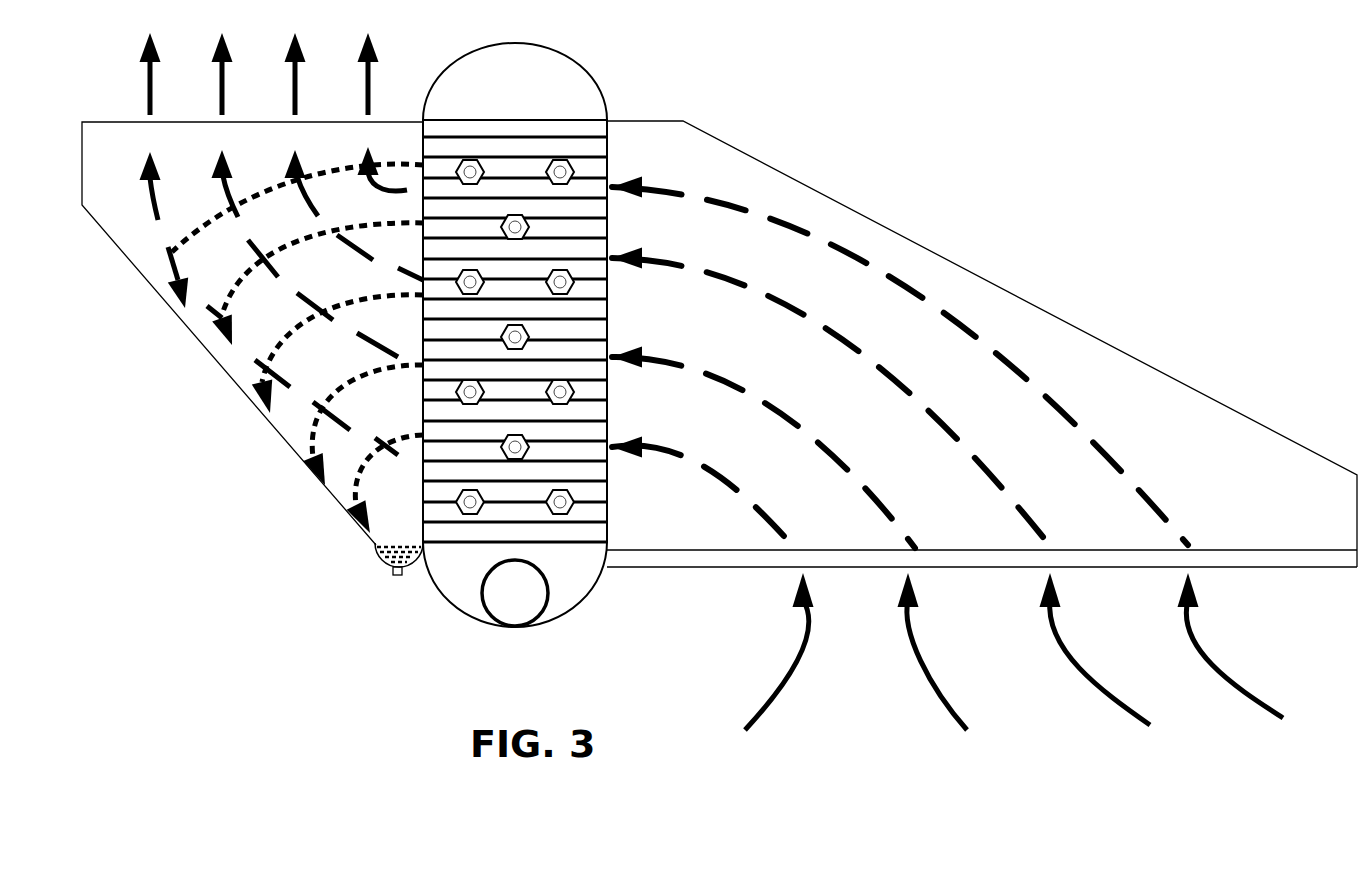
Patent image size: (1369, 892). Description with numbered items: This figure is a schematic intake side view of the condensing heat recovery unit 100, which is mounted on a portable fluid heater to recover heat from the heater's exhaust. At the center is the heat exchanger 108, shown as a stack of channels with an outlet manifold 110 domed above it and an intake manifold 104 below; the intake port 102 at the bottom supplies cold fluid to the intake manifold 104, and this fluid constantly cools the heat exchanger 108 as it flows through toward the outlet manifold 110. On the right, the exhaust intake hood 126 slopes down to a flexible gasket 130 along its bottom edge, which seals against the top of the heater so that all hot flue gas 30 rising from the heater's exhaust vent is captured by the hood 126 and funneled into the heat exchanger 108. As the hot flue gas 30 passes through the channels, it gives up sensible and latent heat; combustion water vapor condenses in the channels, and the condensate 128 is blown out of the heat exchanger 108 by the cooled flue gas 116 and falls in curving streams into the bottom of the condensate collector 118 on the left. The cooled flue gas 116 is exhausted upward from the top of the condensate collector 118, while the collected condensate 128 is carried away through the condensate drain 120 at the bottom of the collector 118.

The hot flue gas 30 is at (1262, 666).
The condensing heat recovery unit 100 is at (982, 361).
The intake port 102 is at (540, 618).
The intake manifold 104 is at (596, 580).
The heat exchanger 108 is at (612, 117).
The outlet manifold 110 is at (563, 70).
The cooled flue gas 116 is at (390, 45).
The condensate collector 118 is at (222, 372).
The condensate drain 120 is at (395, 576).
The exhaust intake hood 126 is at (1040, 307).
The condensate 128 is at (172, 288).
The flexible gasket 130 is at (1247, 560).